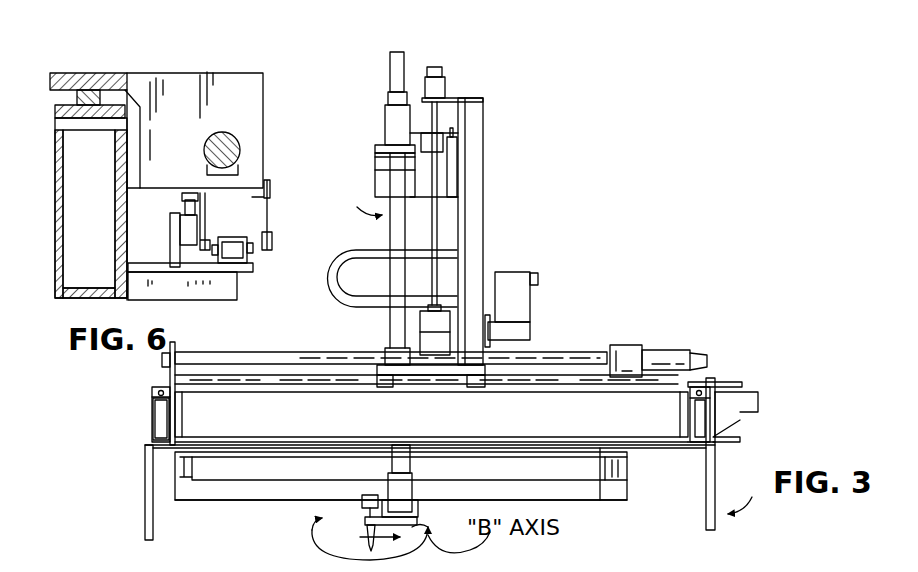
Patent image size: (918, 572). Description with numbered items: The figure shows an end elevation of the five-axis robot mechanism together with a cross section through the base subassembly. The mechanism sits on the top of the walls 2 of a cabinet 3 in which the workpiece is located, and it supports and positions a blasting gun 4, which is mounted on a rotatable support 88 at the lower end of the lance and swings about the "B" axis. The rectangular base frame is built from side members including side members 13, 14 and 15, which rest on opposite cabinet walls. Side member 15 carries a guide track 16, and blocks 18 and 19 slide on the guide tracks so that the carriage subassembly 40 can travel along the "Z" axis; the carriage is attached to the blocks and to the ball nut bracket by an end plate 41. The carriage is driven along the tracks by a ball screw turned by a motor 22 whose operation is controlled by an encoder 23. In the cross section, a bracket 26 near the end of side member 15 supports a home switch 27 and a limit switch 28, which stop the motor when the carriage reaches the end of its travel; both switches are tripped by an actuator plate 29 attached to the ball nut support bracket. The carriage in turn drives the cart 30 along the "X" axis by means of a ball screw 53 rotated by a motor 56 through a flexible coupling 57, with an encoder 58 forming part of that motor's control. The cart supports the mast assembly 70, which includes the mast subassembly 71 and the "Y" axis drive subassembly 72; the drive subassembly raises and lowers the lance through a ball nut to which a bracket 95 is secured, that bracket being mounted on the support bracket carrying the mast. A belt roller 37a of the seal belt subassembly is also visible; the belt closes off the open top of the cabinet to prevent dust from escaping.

In FIG. 3, the walls 2 is at (714, 497).
In FIG. 3, the cabinet 3 is at (744, 493).
In FIG. 3, the blasting gun 4 is at (365, 514).
In FIG. 3, the side member 13 is at (716, 443).
In FIG. 3, the side member 14 is at (258, 400).
In FIG. 6, the side member 15 is at (63, 251).
In FIG. 3, the side member 15 is at (152, 430).
In FIG. 6, the guide track 16 is at (60, 101).
In FIG. 6, the block 18 is at (62, 90).
In FIG. 3, the block 18 is at (157, 392).
In FIG. 3, the block 19 is at (725, 384).
In FIG. 3, the motor 22 is at (746, 393).
In FIG. 3, the encoder 23 is at (741, 408).
In FIG. 6, the bracket 26 is at (235, 285).
In FIG. 6, the home switch 27 is at (184, 238).
In FIG. 6, the limit switch 28 is at (245, 258).
In FIG. 6, the actuator plate 29 is at (260, 160).
In FIG. 3, the cart subassembly 30 is at (487, 372).
In FIG. 3, the belt roller 37a is at (607, 478).
In FIG. 3, the carriage subassembly 40 is at (539, 348).
In FIG. 3, the plate 41 is at (736, 386).
In FIG. 3, the ball screw 53 is at (571, 352).
In FIG. 3, the motor 56 is at (659, 350).
In FIG. 3, the flexible coupling 57 is at (627, 346).
In FIG. 3, the encoder 58 is at (694, 352).
In FIG. 3, the mast assembly 70 is at (393, 248).
In FIG. 3, the mast subassembly 71 is at (397, 228).
In FIG. 3, the Y axis drive subassembly 72 is at (439, 216).
In FIG. 3, the support 88 is at (401, 539).
In FIG. 3, the bracket 95 is at (475, 150).